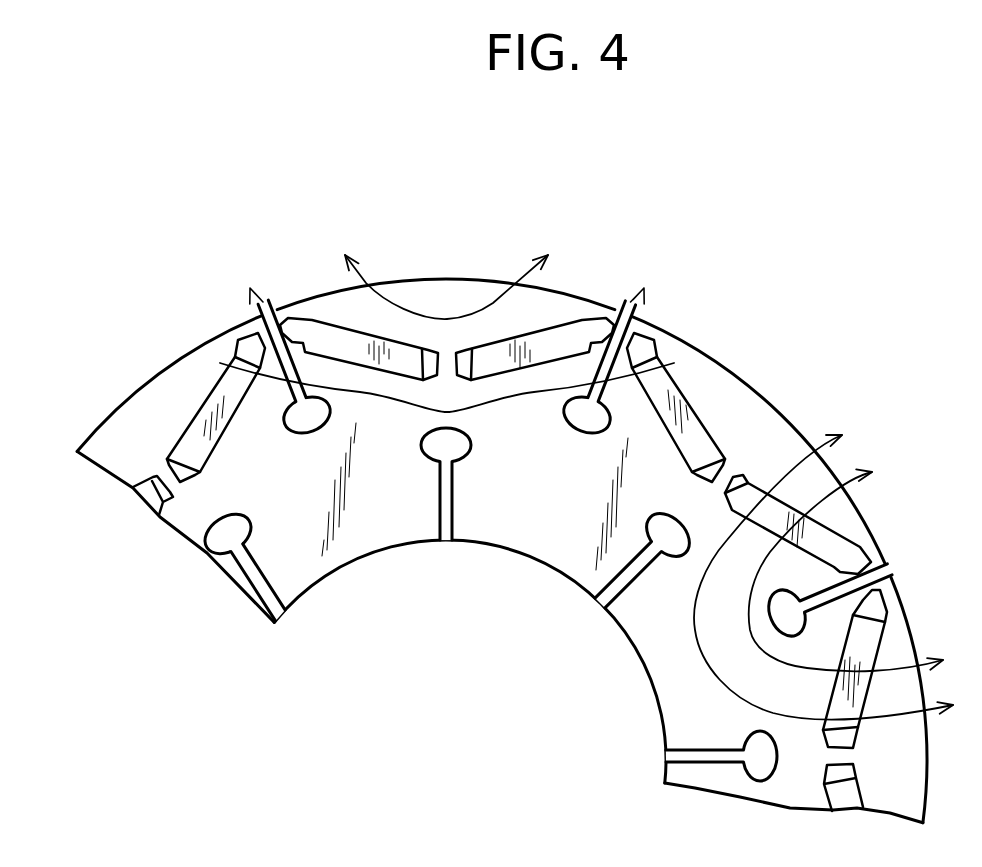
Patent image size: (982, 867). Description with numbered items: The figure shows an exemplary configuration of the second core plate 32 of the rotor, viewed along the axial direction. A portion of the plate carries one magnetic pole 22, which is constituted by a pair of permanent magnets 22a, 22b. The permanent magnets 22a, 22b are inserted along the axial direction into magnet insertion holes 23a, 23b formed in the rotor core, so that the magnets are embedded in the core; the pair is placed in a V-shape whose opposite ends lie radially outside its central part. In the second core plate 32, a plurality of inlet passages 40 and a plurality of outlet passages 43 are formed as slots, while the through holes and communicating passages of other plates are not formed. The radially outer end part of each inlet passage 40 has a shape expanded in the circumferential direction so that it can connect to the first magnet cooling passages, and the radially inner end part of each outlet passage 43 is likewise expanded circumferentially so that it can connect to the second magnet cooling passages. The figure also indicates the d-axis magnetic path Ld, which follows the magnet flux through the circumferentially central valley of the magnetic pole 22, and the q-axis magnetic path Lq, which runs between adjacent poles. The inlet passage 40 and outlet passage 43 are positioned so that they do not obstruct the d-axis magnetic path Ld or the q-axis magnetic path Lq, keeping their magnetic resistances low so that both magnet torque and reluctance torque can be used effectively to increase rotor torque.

The magnetic pole 22 is at (433, 267).
The permanent magnet 22a is at (340, 342).
The permanent magnet 22b is at (497, 355).
The magnet insertion hole 23a is at (288, 312).
The magnet insertion hole 23b is at (605, 318).
The second core plate 32 is at (148, 413).
The inlet passage 40 is at (447, 492).
The outlet passage 43 is at (225, 365).
The q-axis magnetic path Lq is at (498, 303).
The d-axis magnetic path Ld is at (797, 468).